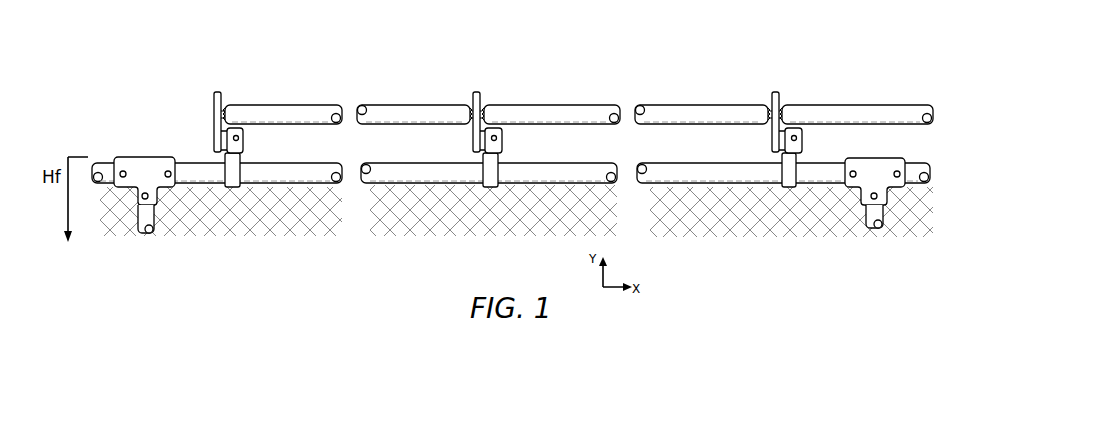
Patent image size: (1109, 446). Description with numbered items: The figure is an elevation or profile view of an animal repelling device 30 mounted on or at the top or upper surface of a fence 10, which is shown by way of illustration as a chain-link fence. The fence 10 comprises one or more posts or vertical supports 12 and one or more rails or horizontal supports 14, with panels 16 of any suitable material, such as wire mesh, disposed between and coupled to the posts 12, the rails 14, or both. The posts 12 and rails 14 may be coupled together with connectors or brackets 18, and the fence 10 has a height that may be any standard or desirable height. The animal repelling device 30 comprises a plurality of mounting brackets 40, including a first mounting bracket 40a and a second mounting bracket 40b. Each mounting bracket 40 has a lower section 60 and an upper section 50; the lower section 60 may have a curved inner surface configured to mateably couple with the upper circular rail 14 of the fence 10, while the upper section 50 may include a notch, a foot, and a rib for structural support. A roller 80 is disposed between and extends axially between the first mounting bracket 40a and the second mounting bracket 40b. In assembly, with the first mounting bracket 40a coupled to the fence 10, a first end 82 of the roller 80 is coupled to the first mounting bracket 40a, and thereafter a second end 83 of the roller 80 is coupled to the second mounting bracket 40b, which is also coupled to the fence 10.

The fence 10 is at (517, 191).
The post 12 is at (137, 226).
The rail 14 is at (322, 175).
The panel 16 is at (229, 218).
The bracket 18 is at (141, 162).
The animal repelling device 30 is at (897, 48).
The mounting bracket 40 is at (206, 114).
The first mounting bracket 40a is at (503, 140).
The second mounting bracket 40b is at (803, 141).
The upper section 50 is at (217, 93).
The lower section 60 is at (227, 168).
The roller 80 is at (318, 105).
The first end 82 is at (487, 105).
The second end 83 is at (771, 100).